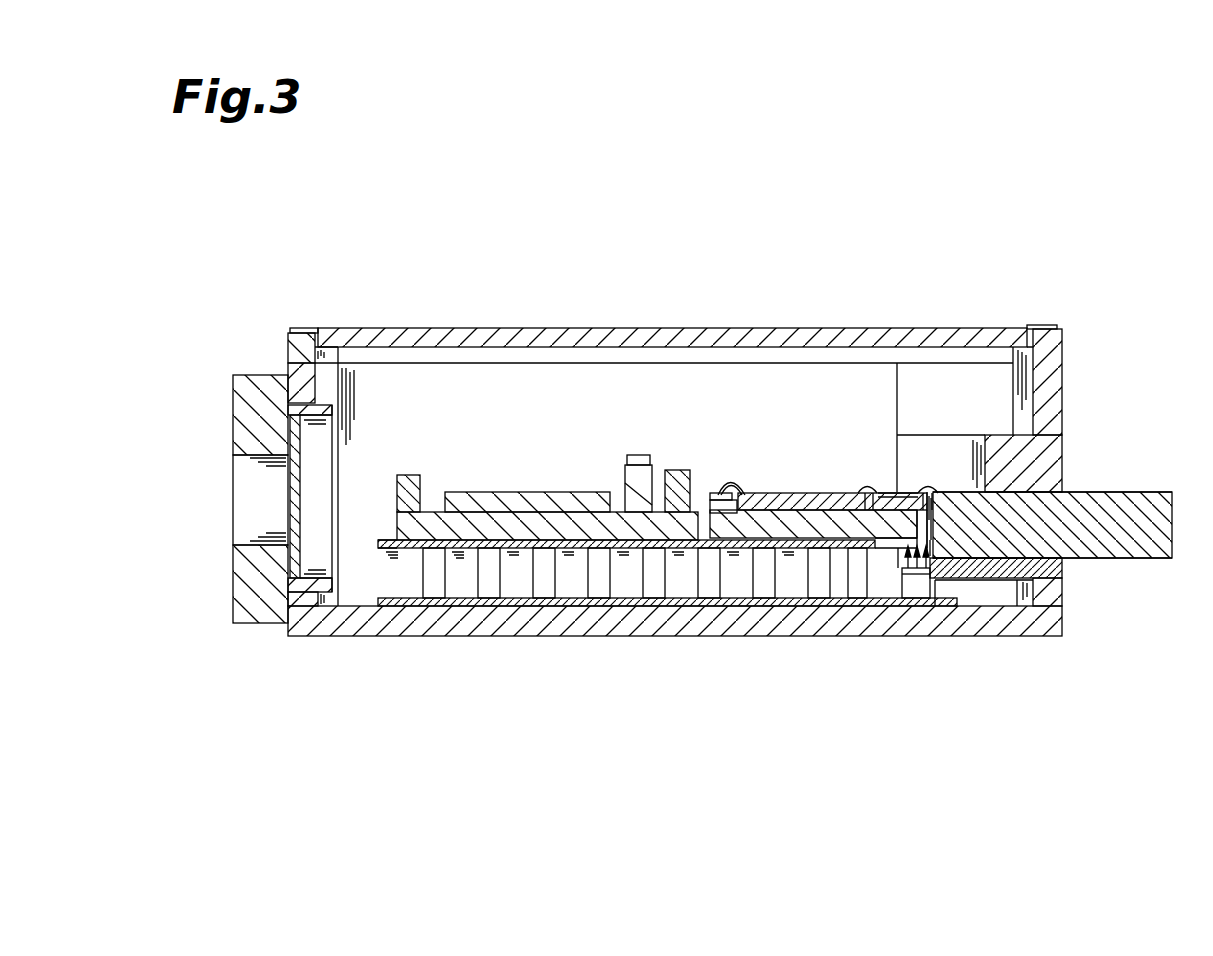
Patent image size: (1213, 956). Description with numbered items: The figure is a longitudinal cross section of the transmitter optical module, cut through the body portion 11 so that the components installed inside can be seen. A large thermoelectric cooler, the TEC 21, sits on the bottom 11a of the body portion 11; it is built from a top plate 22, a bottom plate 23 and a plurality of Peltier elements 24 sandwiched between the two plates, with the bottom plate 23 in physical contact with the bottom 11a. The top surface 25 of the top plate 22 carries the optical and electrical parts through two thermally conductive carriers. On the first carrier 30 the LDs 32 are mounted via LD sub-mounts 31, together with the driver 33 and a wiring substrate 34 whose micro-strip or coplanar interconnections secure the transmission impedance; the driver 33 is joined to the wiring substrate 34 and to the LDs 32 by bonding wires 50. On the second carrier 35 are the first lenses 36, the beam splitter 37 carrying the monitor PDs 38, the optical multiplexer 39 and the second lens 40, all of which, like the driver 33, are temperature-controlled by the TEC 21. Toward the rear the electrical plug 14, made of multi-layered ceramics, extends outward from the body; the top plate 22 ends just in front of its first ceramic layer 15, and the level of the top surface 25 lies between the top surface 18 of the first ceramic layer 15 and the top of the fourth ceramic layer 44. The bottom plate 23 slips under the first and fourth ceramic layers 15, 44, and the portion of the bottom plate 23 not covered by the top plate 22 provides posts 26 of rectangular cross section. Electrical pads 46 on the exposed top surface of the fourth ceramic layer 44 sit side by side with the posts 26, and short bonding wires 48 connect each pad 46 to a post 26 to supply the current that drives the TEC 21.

The body portion 11 is at (326, 297).
The bottom 11a is at (356, 606).
The electrical plug 14 is at (1155, 467).
The first ceramic layer 15 is at (1140, 538).
The top surface of first ceramic layer 18 is at (1098, 491).
The TEC 21 is at (667, 620).
The top plate 22 is at (579, 546).
The bottom plate 23 is at (626, 607).
The Peltier elements 24 is at (683, 578).
The top surface of top plate 25 is at (387, 540).
The posts 26 is at (912, 588).
The first carrier 30 is at (773, 510).
The LD sub-mount 31 is at (712, 500).
The LD 32 is at (741, 493).
The driver 33 is at (812, 500).
The wiring substrate 34 is at (880, 490).
The second carrier 35 is at (430, 518).
The first lens 36 is at (680, 470).
The beam splitter 37 is at (628, 478).
The monitor photodiode 38 is at (645, 455).
The optical multiplexer 39 is at (519, 500).
The second lens 40 is at (410, 476).
The fourth ceramic layer 44 is at (1053, 568).
The electrical pad 46 is at (899, 557).
The bonding wire 48 is at (929, 565).
The bonding wire 50 is at (740, 493).